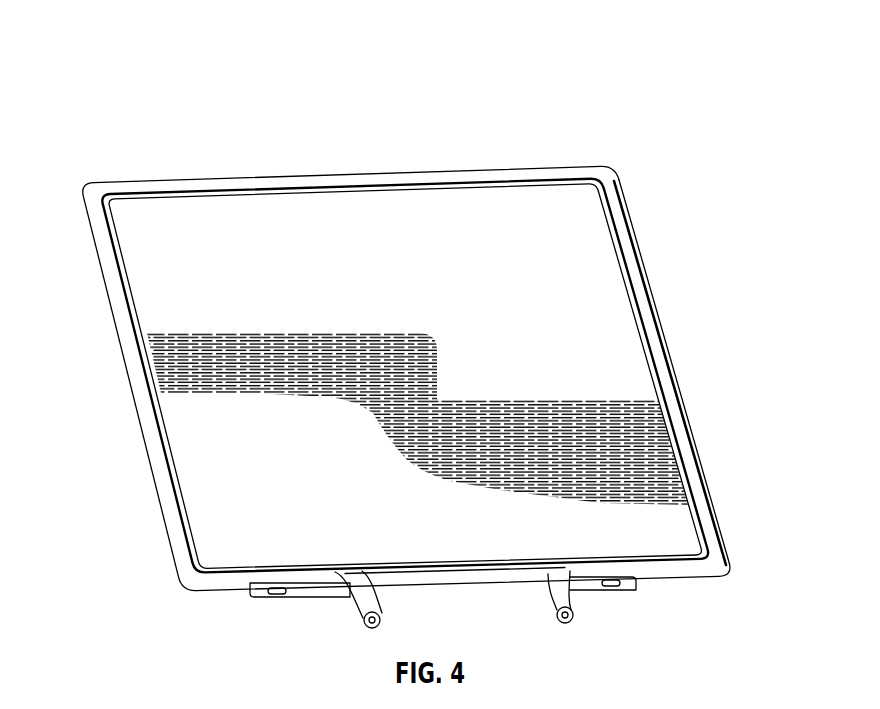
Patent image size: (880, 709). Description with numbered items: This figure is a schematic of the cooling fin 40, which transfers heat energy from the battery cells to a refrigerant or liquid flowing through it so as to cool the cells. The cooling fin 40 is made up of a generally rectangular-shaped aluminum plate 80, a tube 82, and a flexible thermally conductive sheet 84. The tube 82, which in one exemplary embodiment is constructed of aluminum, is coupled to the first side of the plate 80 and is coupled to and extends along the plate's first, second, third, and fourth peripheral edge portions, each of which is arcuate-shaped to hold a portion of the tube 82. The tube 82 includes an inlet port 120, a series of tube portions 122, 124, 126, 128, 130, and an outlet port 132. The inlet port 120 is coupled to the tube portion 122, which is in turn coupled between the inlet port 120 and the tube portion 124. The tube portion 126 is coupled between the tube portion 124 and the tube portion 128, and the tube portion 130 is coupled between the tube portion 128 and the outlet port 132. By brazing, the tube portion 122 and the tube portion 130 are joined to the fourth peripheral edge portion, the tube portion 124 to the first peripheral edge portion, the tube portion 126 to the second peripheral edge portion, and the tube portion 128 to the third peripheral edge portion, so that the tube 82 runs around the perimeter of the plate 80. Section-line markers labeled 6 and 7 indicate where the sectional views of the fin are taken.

The cooling fin 40 is at (548, 117).
The rectangular-shaped aluminum plate 80 is at (465, 581).
The tube 82 is at (665, 369).
The flexible thermally conductive sheet 84 is at (587, 296).
The inlet port 120 is at (572, 606).
The tube portion 122 is at (668, 570).
The tube portion 124 is at (685, 445).
The tube portion 126 is at (363, 177).
The tube portion 128 is at (134, 362).
The tube portion 130 is at (303, 578).
The outlet port 132 is at (367, 612).
The section line 6- 6 is at (133, 180).
The section line 7- 7 is at (78, 247).